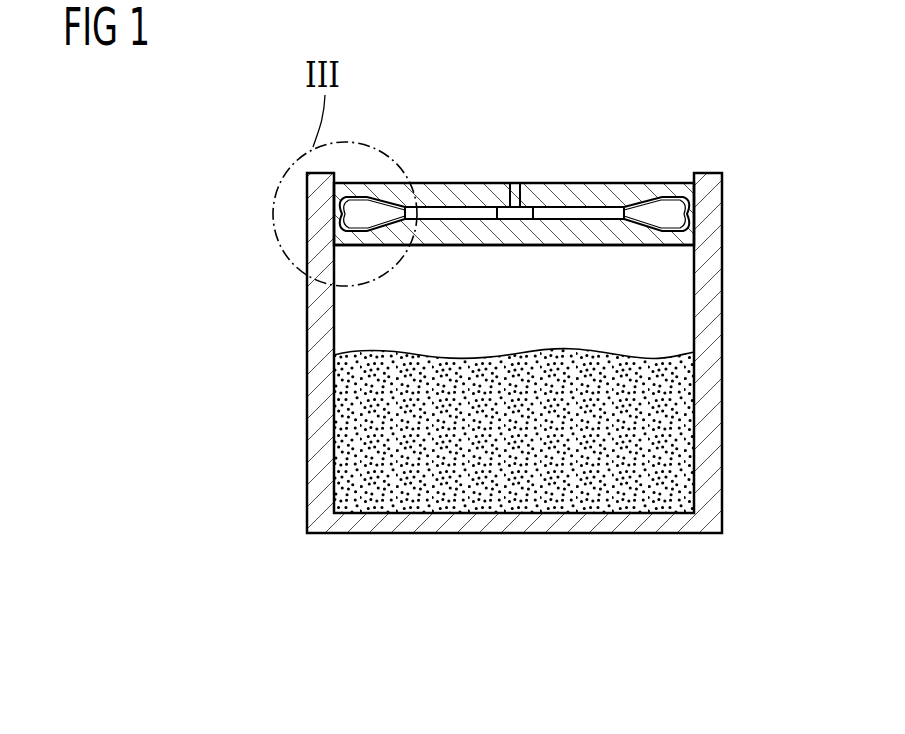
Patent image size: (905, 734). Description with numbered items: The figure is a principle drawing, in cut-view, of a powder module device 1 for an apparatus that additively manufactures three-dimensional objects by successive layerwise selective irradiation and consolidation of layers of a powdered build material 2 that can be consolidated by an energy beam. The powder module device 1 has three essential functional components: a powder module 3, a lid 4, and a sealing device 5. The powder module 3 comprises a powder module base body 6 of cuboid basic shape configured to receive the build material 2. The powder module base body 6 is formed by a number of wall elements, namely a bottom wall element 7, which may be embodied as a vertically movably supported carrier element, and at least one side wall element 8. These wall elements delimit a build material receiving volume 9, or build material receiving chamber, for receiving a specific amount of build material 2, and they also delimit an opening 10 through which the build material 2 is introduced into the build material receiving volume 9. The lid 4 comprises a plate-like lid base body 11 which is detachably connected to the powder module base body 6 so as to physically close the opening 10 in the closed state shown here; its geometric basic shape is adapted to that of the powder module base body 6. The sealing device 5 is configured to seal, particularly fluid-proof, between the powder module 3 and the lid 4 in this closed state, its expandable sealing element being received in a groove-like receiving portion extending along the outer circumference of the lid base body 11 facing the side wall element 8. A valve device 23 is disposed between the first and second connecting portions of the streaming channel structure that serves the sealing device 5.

The powder module device 1 is at (654, 82).
The build material 2 is at (673, 462).
The powder module 3 is at (433, 392).
The lid 4 is at (467, 226).
The sealing device 5 is at (346, 164).
The powder module base body 6 is at (433, 392).
The bottom wall element 7 is at (522, 523).
The side wall element 8 is at (313, 493).
The build material receiving volume 9 is at (672, 311).
The opening 10 is at (431, 268).
The lid base body 11 is at (467, 226).
The valve device 23 is at (503, 213).